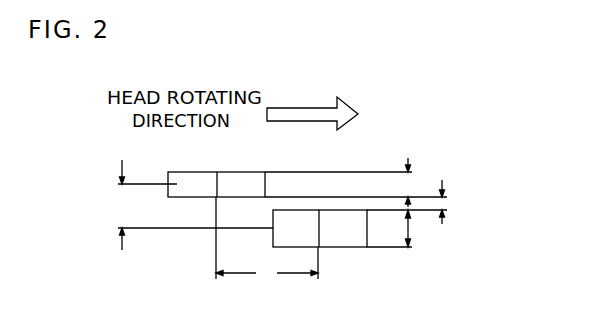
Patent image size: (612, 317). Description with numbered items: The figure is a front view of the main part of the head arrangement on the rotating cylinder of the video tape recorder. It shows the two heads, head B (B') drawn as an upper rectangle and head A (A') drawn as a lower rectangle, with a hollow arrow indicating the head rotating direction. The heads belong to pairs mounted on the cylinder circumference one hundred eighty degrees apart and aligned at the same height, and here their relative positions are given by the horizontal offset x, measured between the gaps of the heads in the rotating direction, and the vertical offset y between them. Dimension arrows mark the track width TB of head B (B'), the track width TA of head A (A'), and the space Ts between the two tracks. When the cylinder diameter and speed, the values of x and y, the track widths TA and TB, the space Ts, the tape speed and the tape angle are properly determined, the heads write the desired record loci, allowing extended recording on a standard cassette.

The head A (A') A is at (347, 247).
The head B (B') B is at (200, 172).
The track width of head A TA is at (420, 229).
The track width of head B TB is at (410, 182).
The space Ts is at (457, 202).
The x offset of the heads x is at (267, 240).
The y offset of the heads y is at (195, 205).